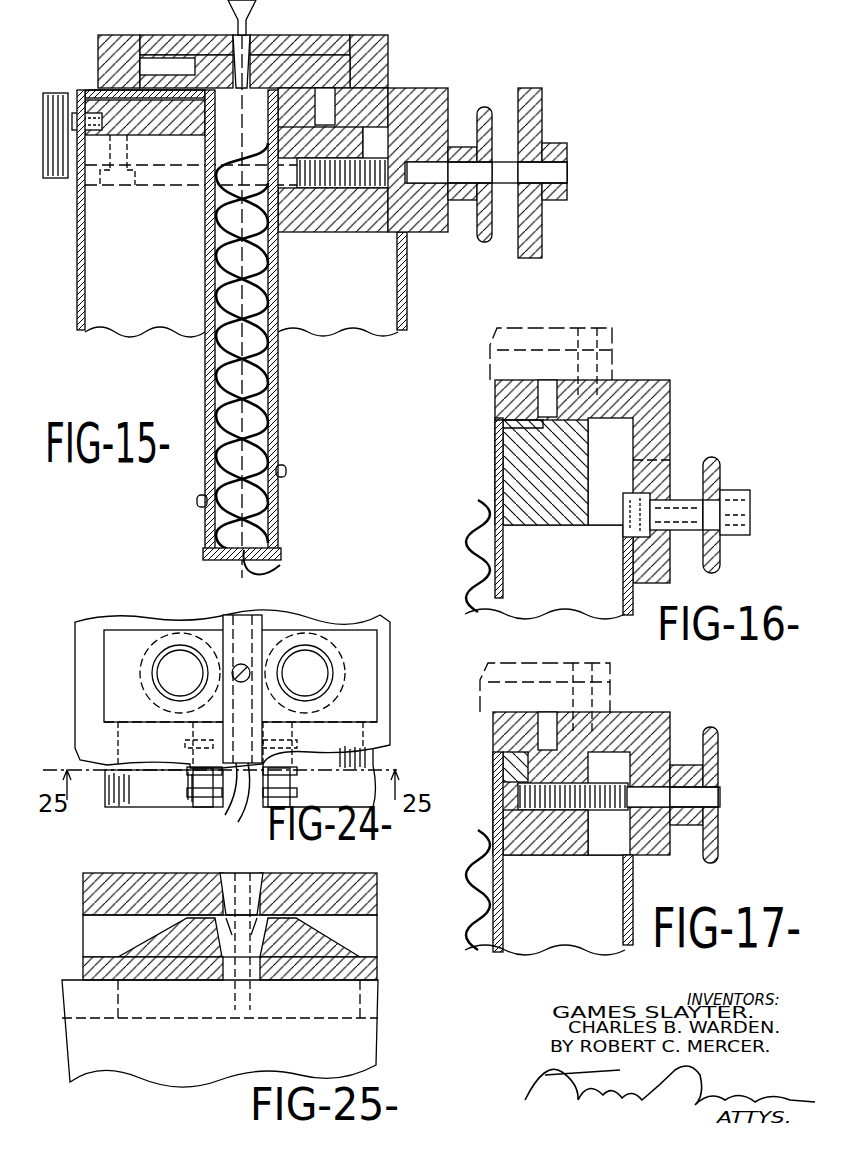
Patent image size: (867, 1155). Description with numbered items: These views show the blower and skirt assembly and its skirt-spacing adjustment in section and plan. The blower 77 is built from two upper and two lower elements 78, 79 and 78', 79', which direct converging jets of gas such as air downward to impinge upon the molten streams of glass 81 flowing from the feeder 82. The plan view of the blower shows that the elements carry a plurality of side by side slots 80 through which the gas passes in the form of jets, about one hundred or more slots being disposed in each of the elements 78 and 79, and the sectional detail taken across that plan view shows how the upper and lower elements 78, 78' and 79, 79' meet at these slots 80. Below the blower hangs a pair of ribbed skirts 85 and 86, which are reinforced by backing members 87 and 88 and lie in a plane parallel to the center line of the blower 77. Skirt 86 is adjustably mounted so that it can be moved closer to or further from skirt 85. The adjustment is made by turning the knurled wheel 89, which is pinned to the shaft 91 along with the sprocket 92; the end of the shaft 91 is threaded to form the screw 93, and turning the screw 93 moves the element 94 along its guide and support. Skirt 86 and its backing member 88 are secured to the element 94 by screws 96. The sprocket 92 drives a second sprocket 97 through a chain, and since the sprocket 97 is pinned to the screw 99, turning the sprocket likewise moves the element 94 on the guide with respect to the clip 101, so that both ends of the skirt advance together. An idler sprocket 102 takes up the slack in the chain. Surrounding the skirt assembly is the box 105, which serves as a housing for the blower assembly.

In FIG. 16, the blower 77 is at (621, 329).
In FIG. 17, the blower 77 is at (618, 676).
In FIG. 15, the upper blower element 78 is at (148, 34).
In FIG. 24, the upper blower element 78 is at (103, 738).
In FIG. 25, the upper blower element 78 is at (97, 888).
In FIG. 15, the lower blower element 78' is at (93, 61).
In FIG. 24, the lower blower element 78' is at (153, 802).
In FIG. 25, the lower blower element 78' is at (134, 949).
In FIG. 15, the upper blower element 79 is at (358, 34).
In FIG. 24, the upper blower element 79 is at (377, 735).
In FIG. 25, the upper blower element 79 is at (377, 898).
In FIG. 15, the lower blower element 79' is at (351, 61).
In FIG. 24, the lower blower element 79' is at (319, 776).
In FIG. 25, the lower blower element 79' is at (343, 949).
In FIG. 15, the slots 80 is at (200, 72).
In FIG. 24, the slots 80 is at (233, 819).
In FIG. 25, the slots 80 is at (255, 942).
In FIG. 15, the molten streams of glass 81 is at (249, 36).
In FIG. 24, the molten streams of glass 81 is at (242, 689).
In FIG. 15, the feeder 82 is at (228, 6).
In FIG. 15, the skirt 85 is at (205, 553).
In FIG. 15, the skirt 86 is at (283, 563).
In FIG. 16, the skirt 86 is at (468, 562).
In FIG. 17, the skirt 86 is at (468, 886).
In FIG. 15, the backing member 87 is at (205, 388).
In FIG. 15, the backing member 88 is at (278, 415).
In FIG. 16, the backing member 88 is at (503, 586).
In FIG. 17, the backing member 88 is at (503, 928).
In FIG. 15, the knurled wheel 89 is at (542, 106).
In FIG. 15, the shaft 91 is at (567, 168).
In FIG. 15, the sprocket 92 is at (455, 147).
In FIG. 15, the screw 93 is at (395, 188).
In FIG. 15, the element 94 is at (292, 233).
In FIG. 16, the element 94 is at (520, 526).
In FIG. 17, the element 94 is at (518, 857).
In FIG. 15, the screws 96 is at (278, 118).
In FIG. 17, the screws 96 is at (500, 748).
In FIG. 17, the sprocket 97 is at (718, 767).
In FIG. 17, the screw 99 is at (612, 812).
In FIG. 15, the clip 101 is at (395, 92).
In FIG. 16, the clip 101 is at (632, 382).
In FIG. 17, the clip 101 is at (637, 714).
In FIG. 16, the idler sprocket 102 is at (720, 465).
In FIG. 15, the box 105 is at (77, 309).